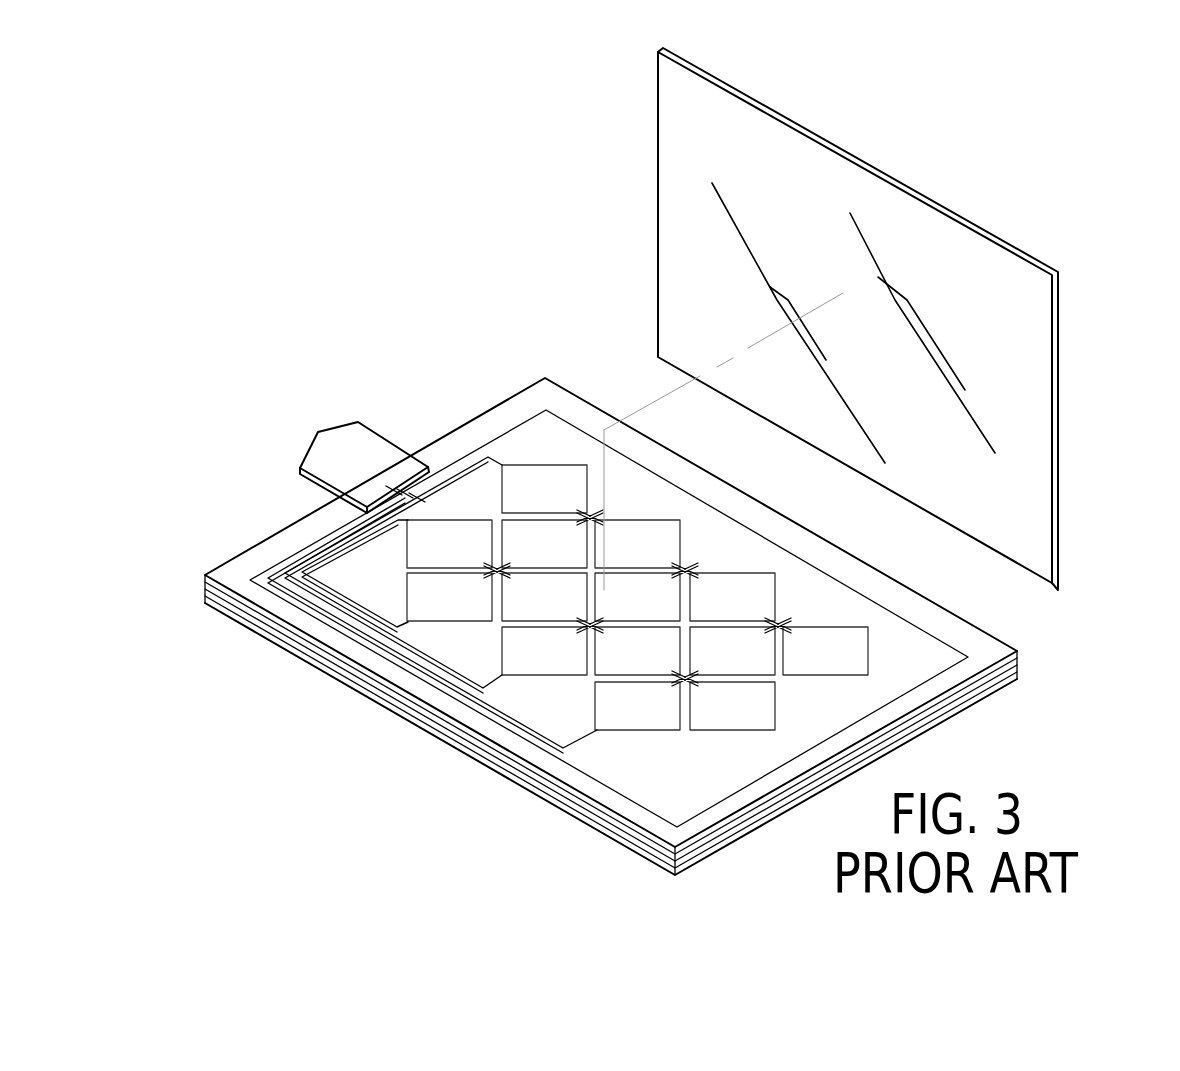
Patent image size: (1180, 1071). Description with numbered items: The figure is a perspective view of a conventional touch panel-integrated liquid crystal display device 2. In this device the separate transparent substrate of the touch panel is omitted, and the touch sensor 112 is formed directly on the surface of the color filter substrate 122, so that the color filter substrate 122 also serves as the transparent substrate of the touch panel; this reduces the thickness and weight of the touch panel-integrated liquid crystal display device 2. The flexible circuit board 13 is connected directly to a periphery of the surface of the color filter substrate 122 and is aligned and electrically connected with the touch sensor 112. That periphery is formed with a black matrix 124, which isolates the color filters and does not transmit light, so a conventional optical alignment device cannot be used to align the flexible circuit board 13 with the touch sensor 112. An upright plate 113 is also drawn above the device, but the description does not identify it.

The touch panel-integrated liquid crystal display device 2 is at (1020, 682).
The flexible circuit board 13 is at (372, 457).
The touch sensor 112 is at (840, 642).
The cover plate 113 is at (1032, 440).
The color filter substrate 122 is at (1017, 651).
The black matrix 124 is at (408, 702).